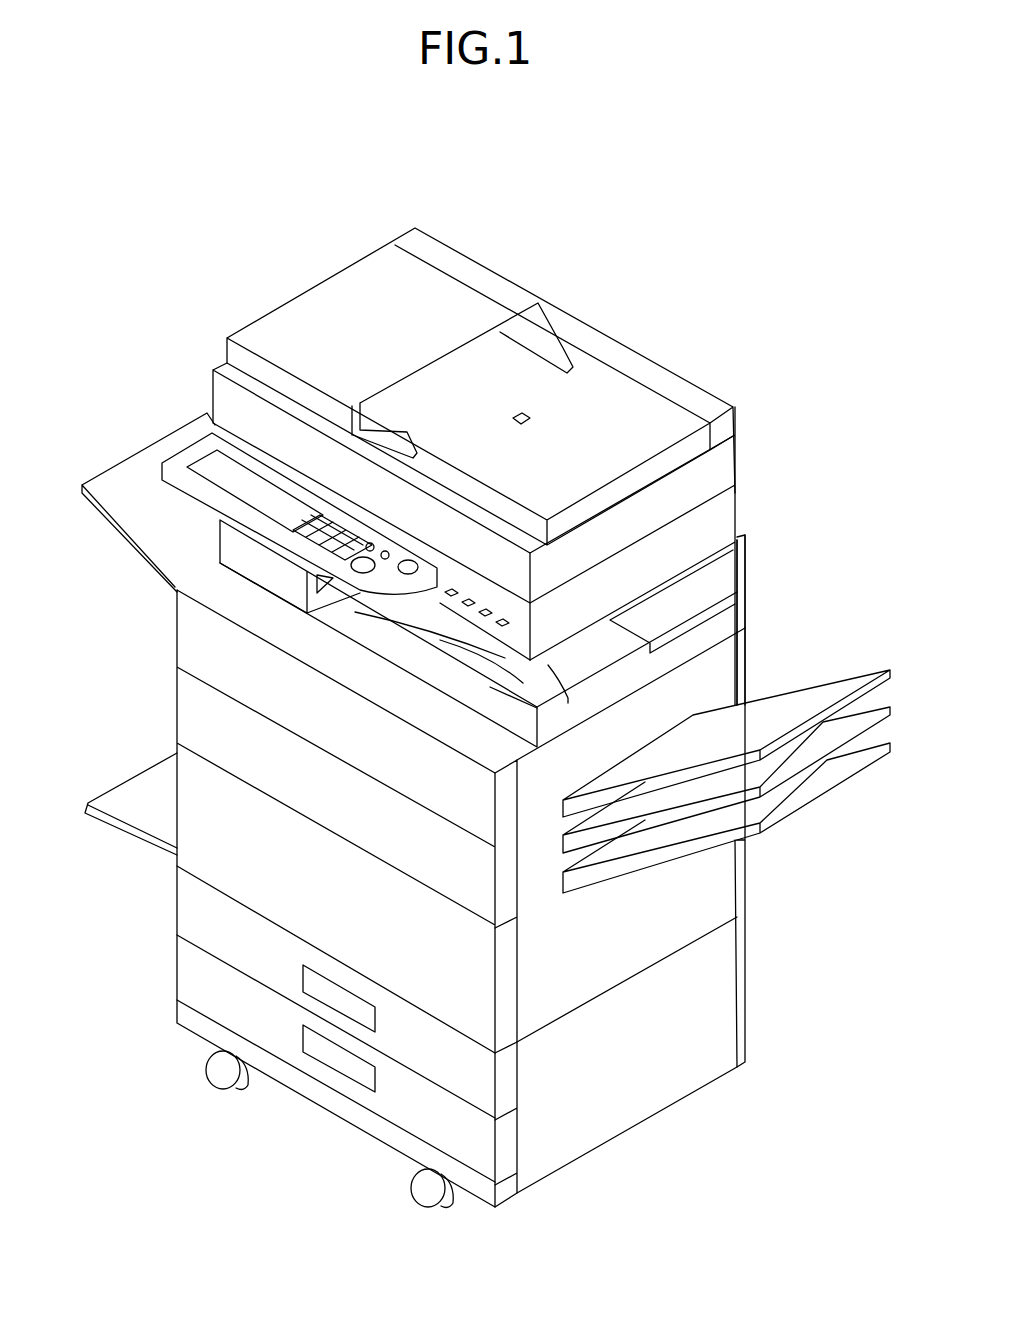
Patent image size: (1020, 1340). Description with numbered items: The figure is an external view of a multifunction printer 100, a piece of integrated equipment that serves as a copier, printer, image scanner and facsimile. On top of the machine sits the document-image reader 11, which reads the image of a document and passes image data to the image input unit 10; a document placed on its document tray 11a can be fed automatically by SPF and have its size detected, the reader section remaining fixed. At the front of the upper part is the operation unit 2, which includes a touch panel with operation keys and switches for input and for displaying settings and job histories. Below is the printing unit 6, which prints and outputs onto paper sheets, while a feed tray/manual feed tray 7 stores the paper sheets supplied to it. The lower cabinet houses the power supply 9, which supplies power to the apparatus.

The multifunction printer 100 is at (760, 344).
The operation unit 2 is at (203, 455).
The printing unit 6 is at (762, 641).
The feed tray/manual feed tray 7 is at (158, 709).
The power supply 9 is at (147, 973).
The image input unit 10 is at (645, 560).
The document-image reader 11 is at (700, 560).
The document tray 11a is at (463, 370).